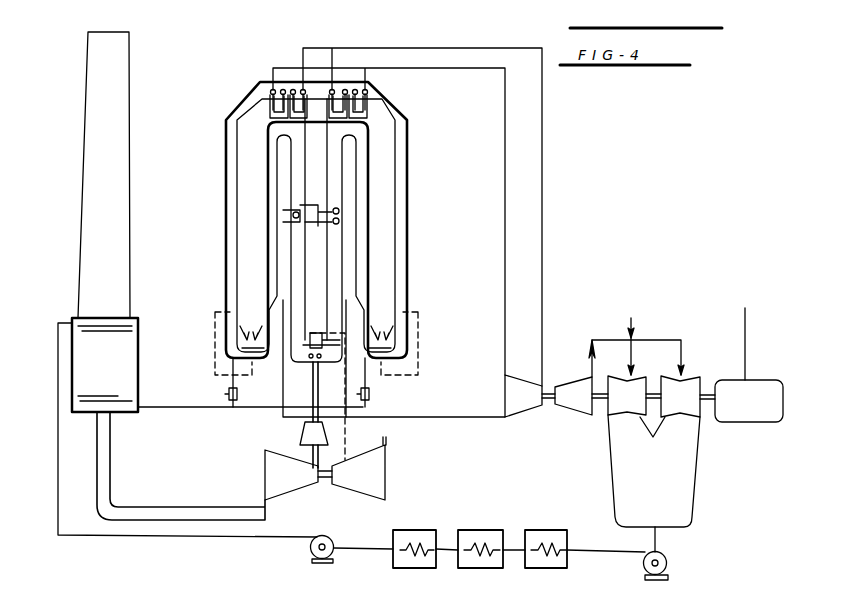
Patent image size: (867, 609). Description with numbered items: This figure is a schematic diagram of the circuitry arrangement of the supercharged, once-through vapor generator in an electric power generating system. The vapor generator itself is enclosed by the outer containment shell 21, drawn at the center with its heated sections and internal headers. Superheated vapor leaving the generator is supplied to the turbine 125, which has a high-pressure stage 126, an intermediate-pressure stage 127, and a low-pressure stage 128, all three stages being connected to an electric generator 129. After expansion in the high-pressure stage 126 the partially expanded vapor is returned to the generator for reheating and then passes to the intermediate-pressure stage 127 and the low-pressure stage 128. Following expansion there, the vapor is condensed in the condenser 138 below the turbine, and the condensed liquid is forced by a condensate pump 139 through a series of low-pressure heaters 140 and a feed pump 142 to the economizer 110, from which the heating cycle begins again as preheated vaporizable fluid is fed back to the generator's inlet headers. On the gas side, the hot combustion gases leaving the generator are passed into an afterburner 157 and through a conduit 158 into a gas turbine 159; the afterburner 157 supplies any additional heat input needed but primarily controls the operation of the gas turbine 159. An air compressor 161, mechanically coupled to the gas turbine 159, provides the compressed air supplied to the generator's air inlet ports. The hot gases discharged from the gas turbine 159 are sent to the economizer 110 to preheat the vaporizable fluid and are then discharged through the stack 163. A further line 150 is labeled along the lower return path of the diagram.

The stack 163 is at (90, 108).
The economizer 110 is at (140, 349).
The outer containment shell 21 is at (412, 190).
The conduit 158 is at (323, 394).
The afterburner 157 is at (300, 432).
The gas turbine 159 is at (264, 480).
The air compressor 161 is at (387, 499).
The feed pump 142 is at (326, 537).
The low-pressure heaters 140 is at (414, 571).
The conduit 150 is at (466, 602).
The high-pressure stage 126 is at (520, 375).
The intermediate-pressure stage 127 is at (572, 378).
The turbine 125 is at (636, 335).
The low-pressure stage 128 is at (622, 420).
The electric generator 129 is at (762, 379).
The condenser 138 is at (697, 500).
The condensate pump 139 is at (667, 564).